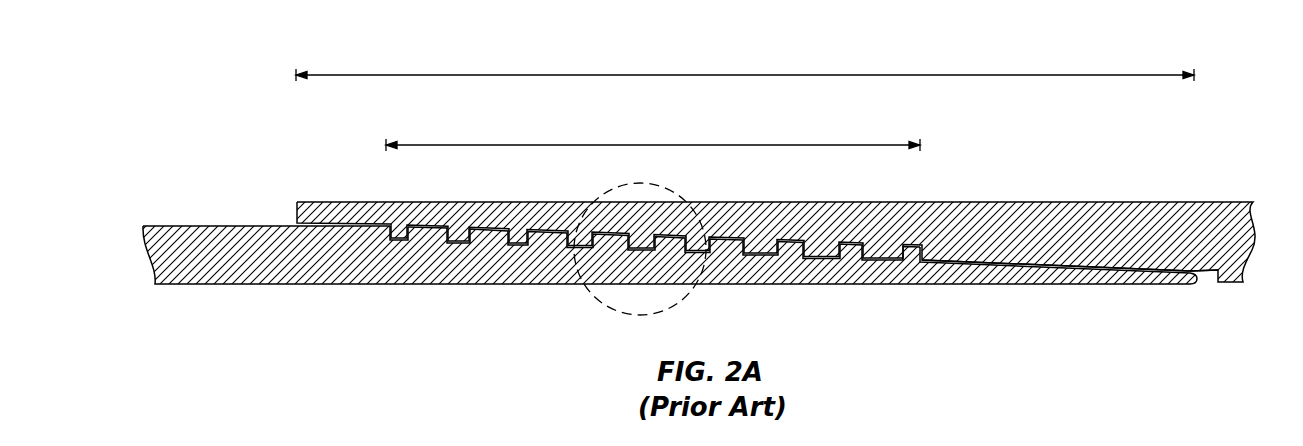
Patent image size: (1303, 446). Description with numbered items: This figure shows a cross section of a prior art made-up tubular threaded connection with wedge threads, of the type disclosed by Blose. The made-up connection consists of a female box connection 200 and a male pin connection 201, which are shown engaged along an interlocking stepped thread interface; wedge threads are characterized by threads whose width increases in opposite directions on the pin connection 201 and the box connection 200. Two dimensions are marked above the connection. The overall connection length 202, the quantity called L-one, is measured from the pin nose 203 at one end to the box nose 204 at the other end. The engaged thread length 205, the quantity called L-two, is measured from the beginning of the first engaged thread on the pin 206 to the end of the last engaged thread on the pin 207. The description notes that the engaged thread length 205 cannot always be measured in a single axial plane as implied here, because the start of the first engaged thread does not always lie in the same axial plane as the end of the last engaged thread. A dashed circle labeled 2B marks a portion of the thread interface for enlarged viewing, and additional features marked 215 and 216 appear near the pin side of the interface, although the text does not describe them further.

The box connection 200 is at (1023, 202).
The pin connection 201 is at (189, 225).
The overall connection length 202 is at (725, 58).
The pin nose 203 is at (1199, 282).
The box nose 204 is at (296, 212).
The engaged thread length 205 is at (635, 128).
The beginning of first engaged thread on the pin 206 is at (931, 254).
The end of last engaged thread on the pin 207 is at (386, 232).
The thin interface region 215 is at (1020, 264).
The lower body top surface 216 is at (933, 263).
The detail view circle 2B is at (668, 313).